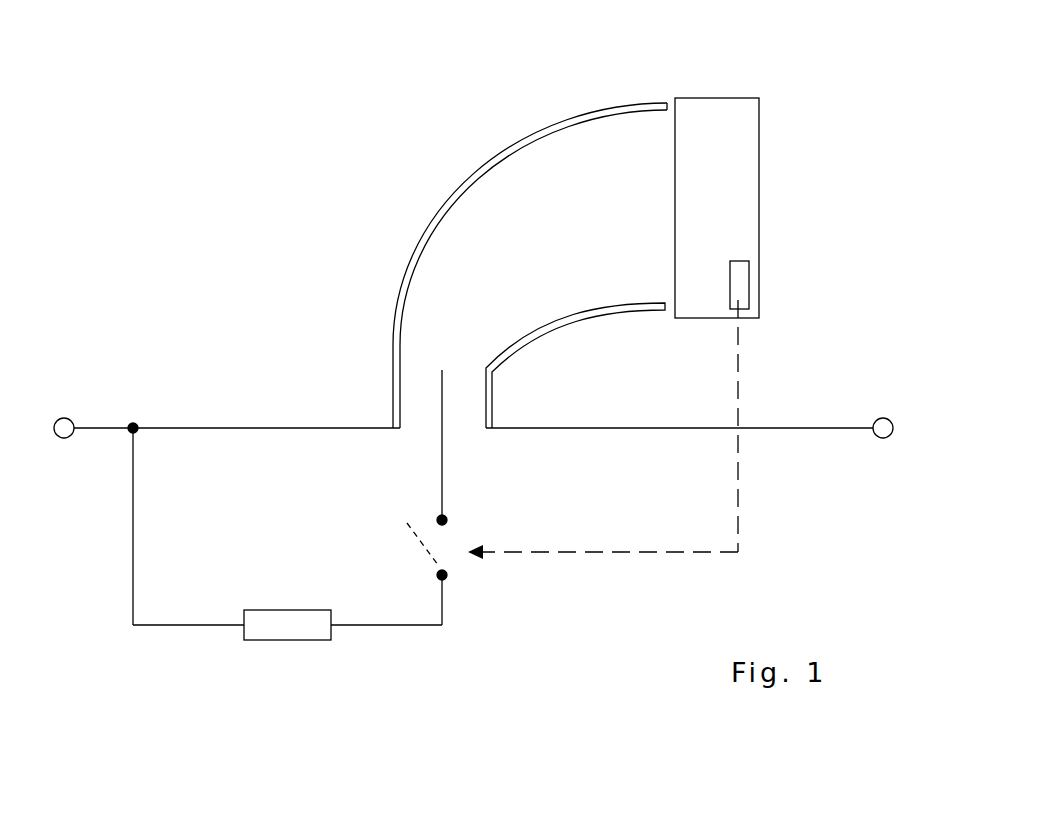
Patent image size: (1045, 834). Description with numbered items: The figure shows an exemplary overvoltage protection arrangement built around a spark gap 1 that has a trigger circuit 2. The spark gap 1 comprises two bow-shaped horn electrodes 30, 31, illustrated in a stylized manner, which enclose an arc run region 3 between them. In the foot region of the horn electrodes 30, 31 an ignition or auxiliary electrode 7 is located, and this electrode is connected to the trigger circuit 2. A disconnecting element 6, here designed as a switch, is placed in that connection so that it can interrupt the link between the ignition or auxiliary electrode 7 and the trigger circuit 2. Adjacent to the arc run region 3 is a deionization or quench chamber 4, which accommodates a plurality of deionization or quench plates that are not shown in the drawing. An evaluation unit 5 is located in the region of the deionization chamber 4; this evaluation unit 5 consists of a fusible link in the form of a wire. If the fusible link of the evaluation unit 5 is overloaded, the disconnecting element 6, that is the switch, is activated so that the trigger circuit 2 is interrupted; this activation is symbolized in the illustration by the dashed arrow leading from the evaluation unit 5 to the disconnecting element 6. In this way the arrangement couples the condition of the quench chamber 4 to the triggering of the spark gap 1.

The spark gap 1 is at (346, 351).
The trigger circuit 2 is at (290, 627).
The arc run region 3 is at (480, 218).
The horn electrode 30 is at (427, 228).
The horn electrode 31 is at (603, 313).
The deionization or quench chamber 4 is at (742, 98).
The evaluation unit 5 is at (749, 277).
The disconnecting element 6 is at (442, 552).
The ignition or auxiliary electrode 7 is at (435, 380).